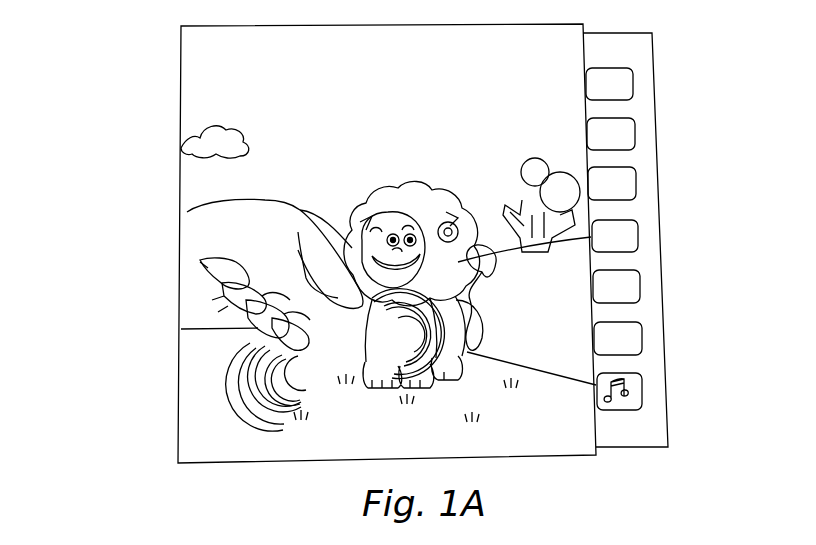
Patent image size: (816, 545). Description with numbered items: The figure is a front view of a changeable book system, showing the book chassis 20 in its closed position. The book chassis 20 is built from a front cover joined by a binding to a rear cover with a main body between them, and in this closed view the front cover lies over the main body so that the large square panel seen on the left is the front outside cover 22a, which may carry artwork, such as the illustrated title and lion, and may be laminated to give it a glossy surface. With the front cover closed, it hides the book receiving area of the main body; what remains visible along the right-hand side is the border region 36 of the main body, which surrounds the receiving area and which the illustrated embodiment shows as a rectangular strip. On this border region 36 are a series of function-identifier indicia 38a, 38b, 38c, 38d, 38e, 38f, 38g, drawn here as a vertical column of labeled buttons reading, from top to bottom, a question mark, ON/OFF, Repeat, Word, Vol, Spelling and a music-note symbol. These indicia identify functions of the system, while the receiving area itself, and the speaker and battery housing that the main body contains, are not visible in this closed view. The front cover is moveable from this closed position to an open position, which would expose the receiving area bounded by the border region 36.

The book chassis 20 is at (136, 73).
The outside cover 22a is at (208, 68).
The border region 36 is at (641, 430).
The function-identifier indicia 38a is at (624, 82).
The function-identifier indicia 38b is at (627, 120).
The function-identifier indicia 38c is at (632, 173).
The function-identifier indicia 38d is at (632, 237).
The function-identifier indicia 38e is at (627, 290).
The function-identifier indicia 38f is at (636, 326).
The function-identifier indicia 38g is at (632, 396).